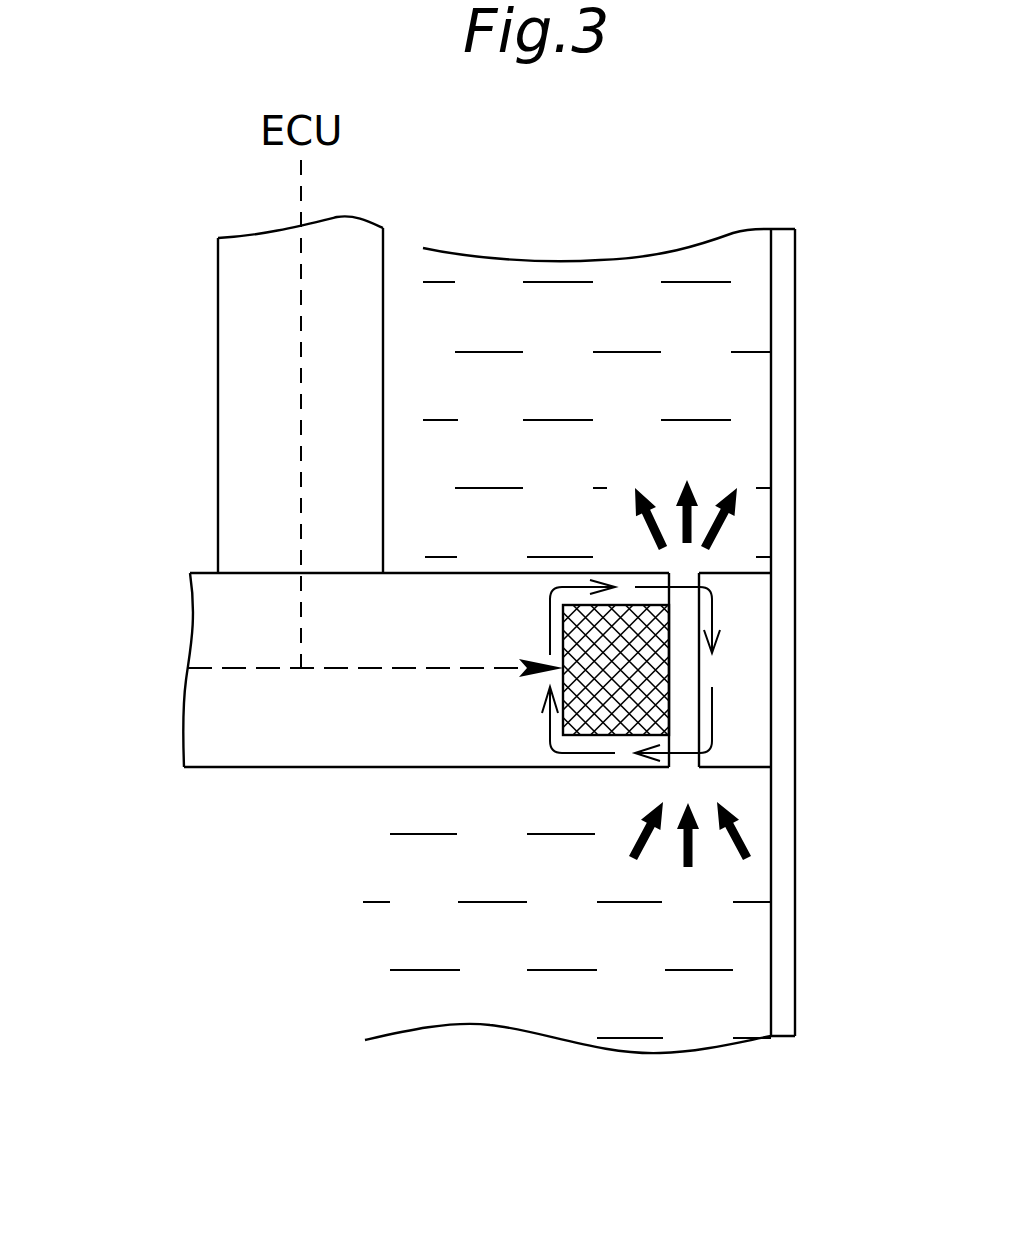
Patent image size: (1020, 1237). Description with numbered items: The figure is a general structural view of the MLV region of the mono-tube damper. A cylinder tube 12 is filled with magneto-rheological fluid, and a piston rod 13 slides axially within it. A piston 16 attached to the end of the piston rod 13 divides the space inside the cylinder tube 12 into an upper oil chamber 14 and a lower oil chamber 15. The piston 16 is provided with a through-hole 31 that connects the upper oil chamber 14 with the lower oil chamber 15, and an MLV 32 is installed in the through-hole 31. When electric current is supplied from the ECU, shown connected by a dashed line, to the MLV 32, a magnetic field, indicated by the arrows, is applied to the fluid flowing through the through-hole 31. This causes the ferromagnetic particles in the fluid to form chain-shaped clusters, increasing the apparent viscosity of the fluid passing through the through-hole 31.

The cylinder tube 12 is at (795, 448).
The piston rod 13 is at (225, 364).
The upper oil chamber 14 is at (718, 370).
The lower oil chamber 15 is at (722, 927).
The piston 16 is at (185, 705).
The through-hole 31 is at (685, 627).
The MLV 32 is at (667, 673).